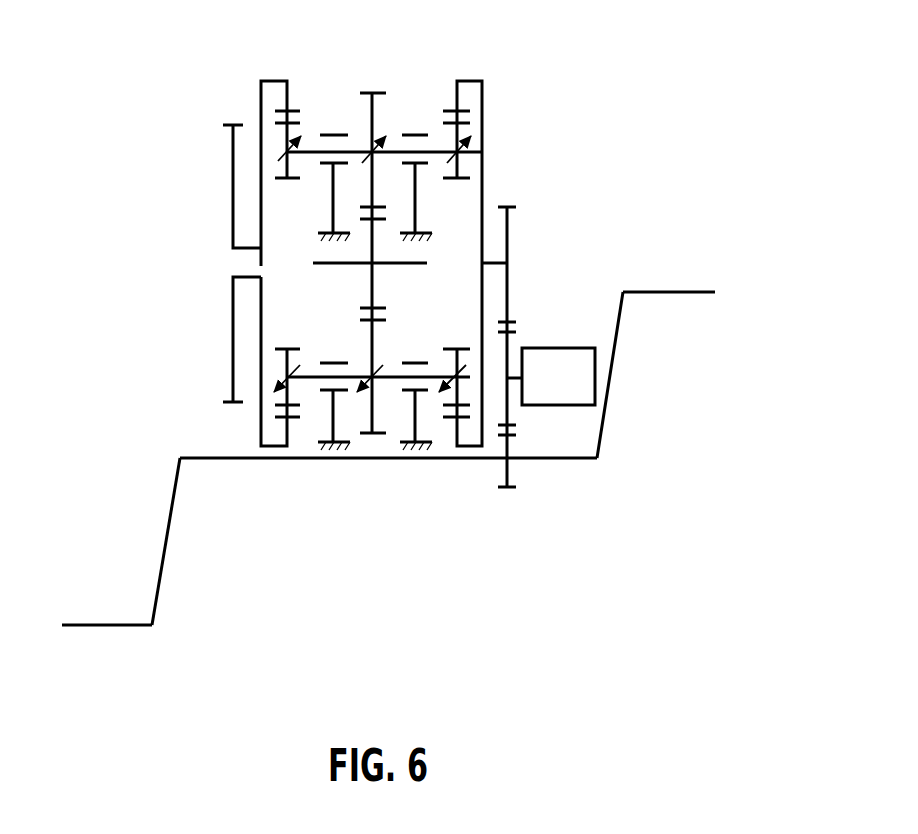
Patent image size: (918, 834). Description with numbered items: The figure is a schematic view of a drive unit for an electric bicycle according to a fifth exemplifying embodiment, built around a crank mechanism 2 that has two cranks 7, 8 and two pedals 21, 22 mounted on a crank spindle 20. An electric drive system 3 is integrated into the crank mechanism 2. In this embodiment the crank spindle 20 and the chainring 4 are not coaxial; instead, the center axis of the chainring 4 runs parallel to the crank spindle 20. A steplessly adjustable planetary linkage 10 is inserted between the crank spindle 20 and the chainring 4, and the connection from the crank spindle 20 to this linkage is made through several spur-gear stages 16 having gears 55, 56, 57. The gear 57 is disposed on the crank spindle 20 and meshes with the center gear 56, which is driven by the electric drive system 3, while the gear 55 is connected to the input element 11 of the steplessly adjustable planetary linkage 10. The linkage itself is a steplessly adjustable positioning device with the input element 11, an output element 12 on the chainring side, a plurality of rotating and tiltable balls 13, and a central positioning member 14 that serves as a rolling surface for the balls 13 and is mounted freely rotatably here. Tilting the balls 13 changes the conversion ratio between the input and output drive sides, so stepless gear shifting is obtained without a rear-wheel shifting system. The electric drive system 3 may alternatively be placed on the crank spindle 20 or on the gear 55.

The crank mechanism 2 is at (620, 450).
The electric drive system 3 is at (583, 388).
The chainring 4 is at (232, 182).
The crank 7 is at (617, 358).
The crank 8 is at (165, 543).
The steplessly adjustable planetary linkage 10 is at (253, 63).
The input element 11 is at (483, 105).
The output element 12 is at (258, 98).
The balls 13 is at (357, 144).
The central positioning member 14 is at (372, 282).
The spur-gear stages 16 is at (532, 316).
The crank spindle 20 is at (295, 460).
The pedal 21 is at (670, 292).
The pedal 22 is at (108, 628).
The gear 55 is at (508, 233).
The center gear 56 is at (508, 340).
The gear 57 is at (508, 467).